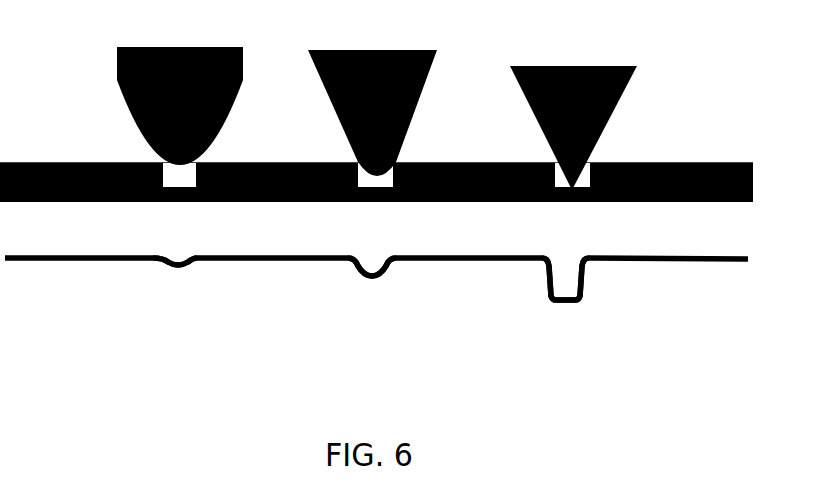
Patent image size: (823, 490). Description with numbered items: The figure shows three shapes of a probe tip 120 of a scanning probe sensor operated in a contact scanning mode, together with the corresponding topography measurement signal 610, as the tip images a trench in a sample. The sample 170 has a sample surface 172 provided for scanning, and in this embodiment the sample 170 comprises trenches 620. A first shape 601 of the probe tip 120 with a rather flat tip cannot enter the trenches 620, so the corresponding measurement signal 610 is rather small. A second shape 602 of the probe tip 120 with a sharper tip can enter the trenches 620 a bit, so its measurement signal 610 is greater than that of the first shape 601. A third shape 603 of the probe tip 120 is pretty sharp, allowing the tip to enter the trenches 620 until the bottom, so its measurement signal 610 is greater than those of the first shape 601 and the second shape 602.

The probe tip 120 is at (120, 105).
The sample 170 is at (753, 192).
The sample surface 172 is at (655, 162).
The trenches 620 is at (175, 178).
The measurement signal 610 is at (687, 264).
The first shape 601 is at (185, 342).
The second shape 602 is at (393, 342).
The third shape 603 is at (593, 348).